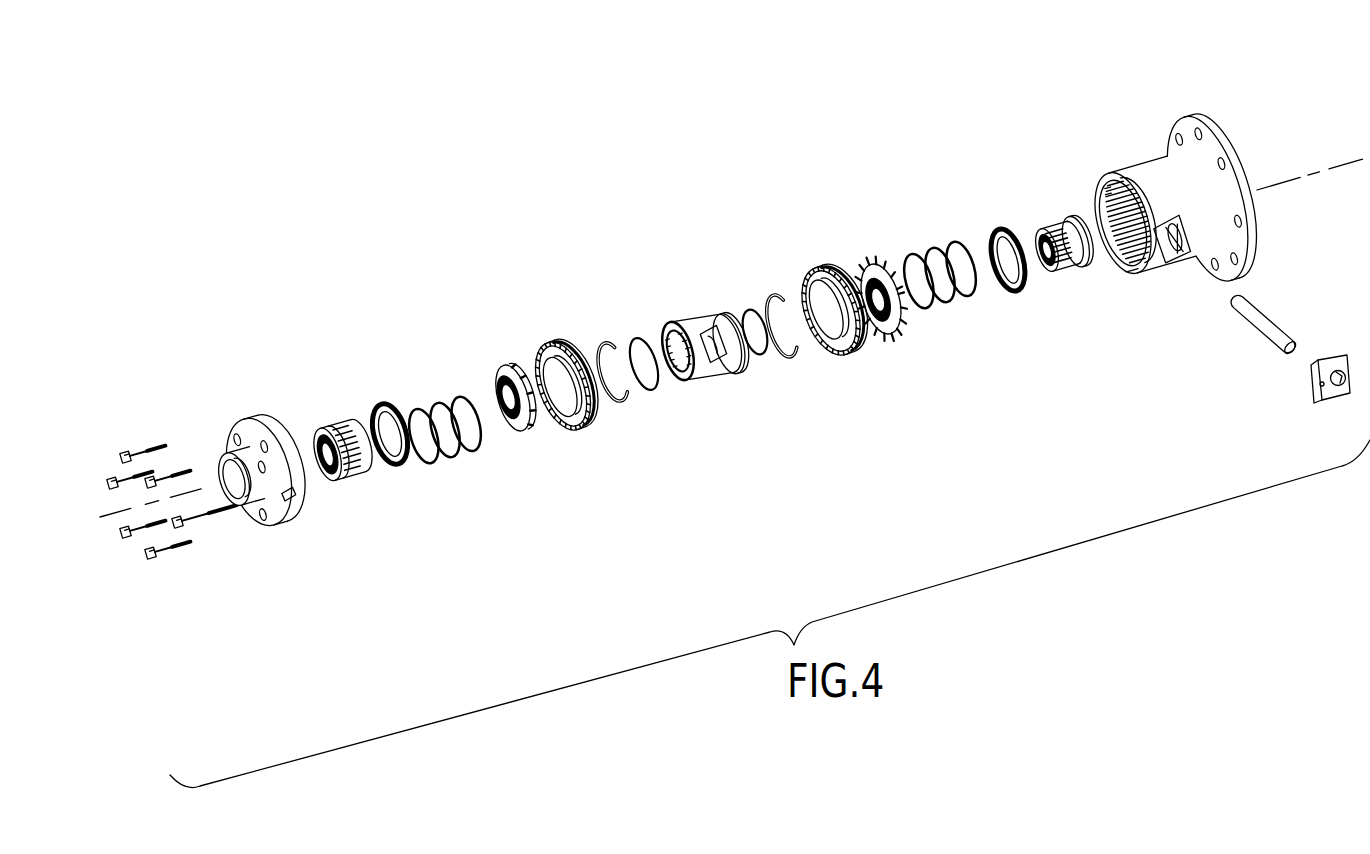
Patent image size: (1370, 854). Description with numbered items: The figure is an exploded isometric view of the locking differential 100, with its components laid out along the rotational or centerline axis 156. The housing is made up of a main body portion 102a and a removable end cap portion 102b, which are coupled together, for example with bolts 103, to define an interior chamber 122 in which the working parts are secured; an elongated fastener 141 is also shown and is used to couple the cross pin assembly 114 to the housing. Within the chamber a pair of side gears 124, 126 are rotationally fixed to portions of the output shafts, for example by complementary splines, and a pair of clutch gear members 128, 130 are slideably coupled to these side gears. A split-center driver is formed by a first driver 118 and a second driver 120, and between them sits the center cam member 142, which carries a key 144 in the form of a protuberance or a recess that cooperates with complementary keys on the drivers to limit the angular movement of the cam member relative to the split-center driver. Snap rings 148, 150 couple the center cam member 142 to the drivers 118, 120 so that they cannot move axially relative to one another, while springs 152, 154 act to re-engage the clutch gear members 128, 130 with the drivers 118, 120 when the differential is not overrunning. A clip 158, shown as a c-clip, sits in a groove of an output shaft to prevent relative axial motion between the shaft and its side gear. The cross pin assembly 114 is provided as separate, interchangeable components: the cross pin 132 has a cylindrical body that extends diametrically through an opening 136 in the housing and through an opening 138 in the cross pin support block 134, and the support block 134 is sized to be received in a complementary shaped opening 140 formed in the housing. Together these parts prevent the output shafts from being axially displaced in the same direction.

The locking differential 100 is at (470, 155).
The main body portion 102a is at (1114, 172).
The end cap portion 102b is at (262, 420).
The bolts 103 is at (150, 426).
The cross pin assembly 114 is at (1248, 373).
The first driver 118 is at (833, 359).
The second driver 120 is at (553, 346).
The interior chamber 122 is at (1115, 269).
The side gear 124 is at (1068, 274).
The side gear 126 is at (353, 473).
The clutch gear member 128 is at (528, 432).
The clutch gear member 130 is at (895, 335).
The cross pin 132 is at (1248, 327).
The cross pin support block 134 is at (1330, 357).
The opening 136 is at (1097, 218).
The opening 138 is at (1334, 388).
The opening 140 is at (1180, 230).
The elongated fastener 141 is at (203, 527).
The center cam member 142 is at (708, 378).
The key 144 is at (738, 356).
The snap ring 148 is at (650, 392).
The snap ring 150 is at (757, 307).
The spring 152 is at (940, 247).
The spring 154 is at (441, 392).
The centerline axis 156 is at (108, 515).
The clip 158 is at (604, 340).